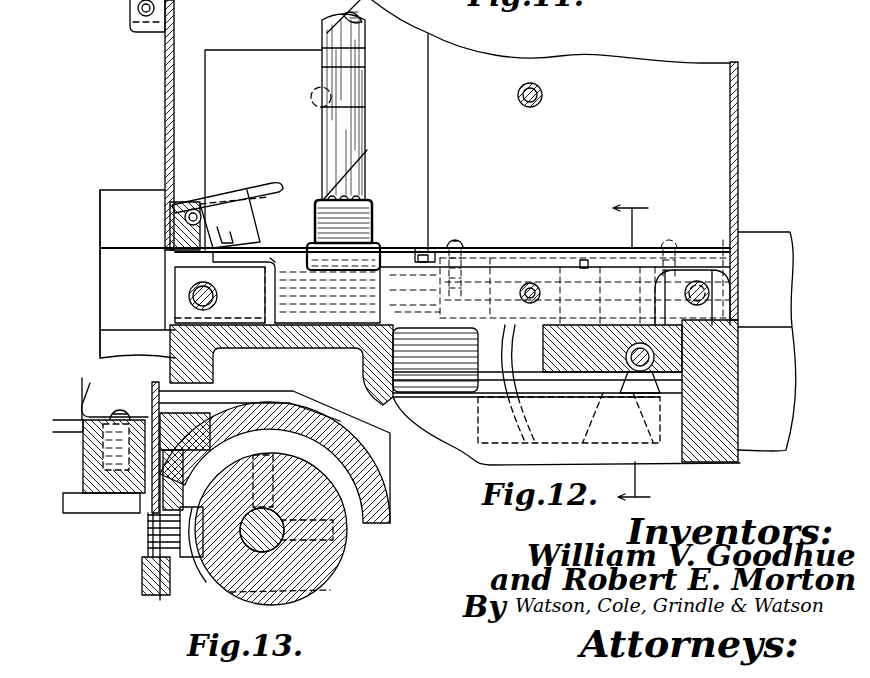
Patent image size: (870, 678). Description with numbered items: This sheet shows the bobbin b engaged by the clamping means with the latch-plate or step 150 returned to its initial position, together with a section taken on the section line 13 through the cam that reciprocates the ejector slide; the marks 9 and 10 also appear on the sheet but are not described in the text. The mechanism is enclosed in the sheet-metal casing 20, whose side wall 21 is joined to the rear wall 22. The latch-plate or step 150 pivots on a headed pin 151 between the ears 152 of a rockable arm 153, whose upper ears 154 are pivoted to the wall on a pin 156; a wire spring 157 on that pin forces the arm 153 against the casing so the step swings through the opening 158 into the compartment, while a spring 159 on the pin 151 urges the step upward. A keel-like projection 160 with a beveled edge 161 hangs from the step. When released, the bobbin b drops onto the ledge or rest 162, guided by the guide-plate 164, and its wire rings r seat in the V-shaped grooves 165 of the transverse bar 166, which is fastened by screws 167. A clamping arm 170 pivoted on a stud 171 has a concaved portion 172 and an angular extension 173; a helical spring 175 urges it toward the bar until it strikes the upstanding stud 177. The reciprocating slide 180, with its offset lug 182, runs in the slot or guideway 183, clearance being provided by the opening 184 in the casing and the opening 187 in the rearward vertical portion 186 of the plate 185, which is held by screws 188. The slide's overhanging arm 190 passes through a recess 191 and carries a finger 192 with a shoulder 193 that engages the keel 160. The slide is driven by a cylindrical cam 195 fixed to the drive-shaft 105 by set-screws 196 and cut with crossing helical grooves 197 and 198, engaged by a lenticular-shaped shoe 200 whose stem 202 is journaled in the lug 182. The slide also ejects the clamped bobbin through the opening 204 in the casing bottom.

In FIG. 12, the lever 9 is at (456, 428).
In FIG. 12, the frame block 10 is at (100, 284).
In FIG. 12, the section line 13 is at (569, 355).
In FIG. 12, the casing 20 is at (746, 186).
In FIG. 12, the side wall 21 is at (176, 52).
In FIG. 12, the rear wall 22 is at (711, 51).
In FIG. 13, the rear wall 22 is at (163, 396).
In FIG. 12, the drive-shaft 105 is at (440, 410).
In FIG. 12, the latch-plate or step 150 is at (253, 187).
In FIG. 12, the headed pin 151 is at (203, 217).
In FIG. 12, the ears 152 is at (213, 229).
In FIG. 12, the rockable arm 153 is at (165, 133).
In FIG. 12, the ears 154 is at (128, 16).
In FIG. 12, the pin 156 is at (136, 10).
In FIG. 12, the wire spring 157 is at (130, 28).
In FIG. 12, the opening 158 is at (196, 205).
In FIG. 12, the spring 159 is at (256, 198).
In FIG. 12, the keel-like projection 160 is at (250, 224).
In FIG. 12, the beveled lower edge 161 is at (210, 262).
In FIG. 12, the ledge or rest 162 is at (338, 352).
In FIG. 12, the guide-plate 164 is at (275, 50).
In FIG. 13, the guide-plate 164 is at (72, 396).
In FIG. 12, the grooves 165 is at (381, 297).
In FIG. 13, the grooves 165 is at (83, 458).
In FIG. 12, the transverse bar 166 is at (185, 316).
In FIG. 13, the transverse bar 166 is at (108, 494).
In FIG. 12, the screws 167 is at (188, 296).
In FIG. 12, the clamping arm 170 is at (472, 272).
In FIG. 12, the stud 171 is at (695, 268).
In FIG. 12, the concaved portion 172 is at (284, 352).
In FIG. 12, the angular extension 173 is at (268, 311).
In FIG. 12, the helical spring 175 is at (540, 286).
In FIG. 12, the upstanding stud 177 is at (586, 260).
In FIG. 12, the reciprocating slide 180 is at (430, 248).
In FIG. 13, the reciprocating slide 180 is at (174, 430).
In FIG. 12, the lug 182 is at (632, 370).
In FIG. 13, the lug 182 is at (148, 518).
In FIG. 12, the slot or guideway 183 is at (456, 240).
In FIG. 13, the slot or guideway 183 is at (145, 497).
In FIG. 12, the opening 184 is at (465, 388).
In FIG. 13, the opening 184 is at (178, 478).
In FIG. 12, the plate 185 is at (654, 246).
In FIG. 13, the plate 185 is at (153, 461).
In FIG. 13, the rearward vertical portion 186 is at (200, 396).
In FIG. 12, the opening 187 is at (480, 270).
In FIG. 13, the opening 187 is at (190, 463).
In FIG. 12, the screws 188 is at (461, 246).
In FIG. 13, the screws 188 is at (118, 415).
In FIG. 12, the overhanging portion or arm 190 is at (392, 246).
In FIG. 13, the overhanging portion or arm 190 is at (67, 417).
In FIG. 12, the slot or recess 191 is at (412, 250).
In FIG. 12, the finger 192 is at (256, 352).
In FIG. 12, the shoulder 193 is at (252, 263).
In FIG. 12, the cylindrical cam 195 is at (490, 394).
In FIG. 13, the cylindrical cam 195 is at (340, 582).
In FIG. 13, the set-screws 196 is at (300, 462).
In FIG. 12, the helical groove 197 is at (648, 443).
In FIG. 13, the helical groove 197 is at (212, 596).
In FIG. 12, the helical groove 198 is at (525, 406).
In FIG. 12, the lenticular-shaped shoe 200 is at (632, 385).
In FIG. 13, the lenticular-shaped shoe 200 is at (206, 594).
In FIG. 13, the stem 202 is at (152, 530).
In FIG. 13, the opening 204 is at (400, 398).
In FIG. 12, the bobbin b is at (366, 178).
In FIG. 12, the wire rings r is at (378, 298).
In FIG. 12, the point y is at (345, 165).